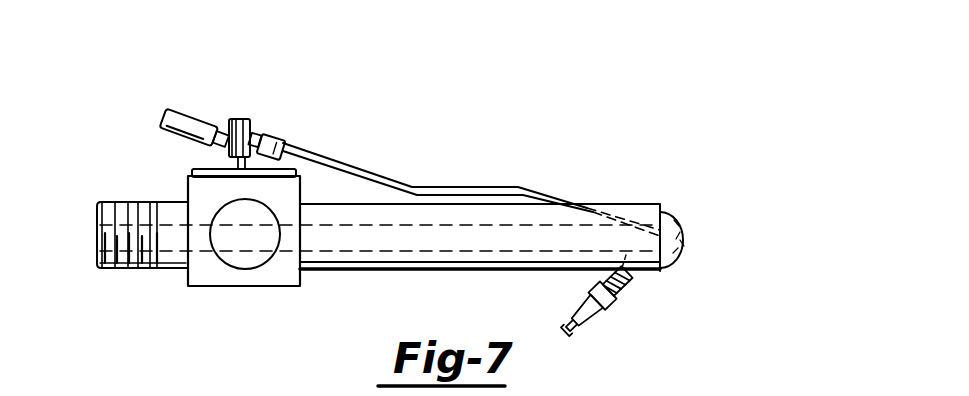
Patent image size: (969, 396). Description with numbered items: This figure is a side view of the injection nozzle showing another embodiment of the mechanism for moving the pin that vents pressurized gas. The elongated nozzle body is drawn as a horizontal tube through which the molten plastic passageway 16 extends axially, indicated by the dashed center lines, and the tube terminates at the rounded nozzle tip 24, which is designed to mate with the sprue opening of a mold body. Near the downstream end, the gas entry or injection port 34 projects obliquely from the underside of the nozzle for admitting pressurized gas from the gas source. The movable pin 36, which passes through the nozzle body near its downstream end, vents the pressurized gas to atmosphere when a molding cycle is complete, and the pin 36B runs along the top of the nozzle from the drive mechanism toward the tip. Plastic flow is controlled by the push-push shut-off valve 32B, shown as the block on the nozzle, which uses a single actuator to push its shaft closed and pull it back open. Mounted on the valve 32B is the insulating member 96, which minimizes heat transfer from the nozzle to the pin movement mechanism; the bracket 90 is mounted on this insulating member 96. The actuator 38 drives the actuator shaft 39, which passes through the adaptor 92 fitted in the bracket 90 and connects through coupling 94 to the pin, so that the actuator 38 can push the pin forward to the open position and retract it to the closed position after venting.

The molten plastic passageway 16 is at (97, 242).
The nozzle tip 24 is at (680, 263).
The push-push shut-off valve 32B is at (213, 278).
The gas entry or injection port 34 is at (622, 293).
The movable pin 36 is at (423, 273).
The movable pin 36B is at (500, 188).
The actuator 38 is at (183, 118).
The actuator shaft 39 is at (229, 118).
The bracket 90 is at (243, 117).
The adaptor 92 is at (253, 131).
The wire coupling 94 is at (283, 143).
The insulating member 96 is at (200, 168).